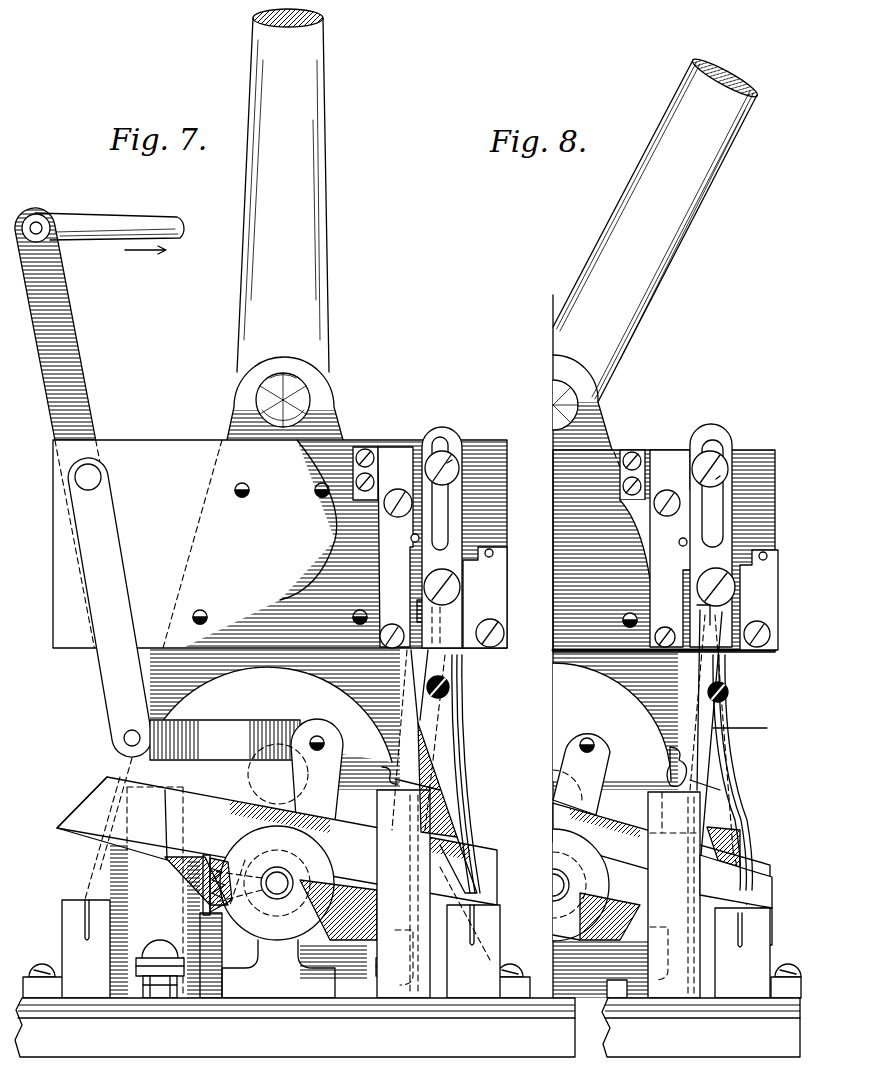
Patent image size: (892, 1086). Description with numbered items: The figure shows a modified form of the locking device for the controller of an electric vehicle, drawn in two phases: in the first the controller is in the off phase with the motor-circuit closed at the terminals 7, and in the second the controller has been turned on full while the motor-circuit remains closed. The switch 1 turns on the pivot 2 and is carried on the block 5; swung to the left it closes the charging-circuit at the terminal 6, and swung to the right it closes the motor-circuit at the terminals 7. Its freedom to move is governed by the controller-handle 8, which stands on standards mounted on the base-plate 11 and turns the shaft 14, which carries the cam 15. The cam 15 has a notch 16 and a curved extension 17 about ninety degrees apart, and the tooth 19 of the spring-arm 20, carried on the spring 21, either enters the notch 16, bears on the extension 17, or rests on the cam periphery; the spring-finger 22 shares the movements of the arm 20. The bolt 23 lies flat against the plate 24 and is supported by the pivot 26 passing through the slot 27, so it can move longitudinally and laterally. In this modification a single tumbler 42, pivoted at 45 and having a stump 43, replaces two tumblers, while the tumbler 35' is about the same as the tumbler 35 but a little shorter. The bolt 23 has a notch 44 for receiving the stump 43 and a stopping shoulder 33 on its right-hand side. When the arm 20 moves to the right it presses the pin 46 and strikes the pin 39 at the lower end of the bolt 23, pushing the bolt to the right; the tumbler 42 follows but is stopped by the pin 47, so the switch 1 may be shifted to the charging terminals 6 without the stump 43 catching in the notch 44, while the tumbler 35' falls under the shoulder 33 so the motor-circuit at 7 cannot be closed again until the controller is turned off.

In FIG. 7, the switch 1 is at (112, 818).
In FIG. 8, the switch 1 is at (736, 900).
In FIG. 7, the pivot 2 is at (269, 883).
In FIG. 8, the pivot 2 is at (557, 887).
In FIG. 7, the block 5 is at (277, 841).
In FIG. 8, the block 5 is at (661, 853).
In FIG. 7, the charging-circuit terminal 6 is at (86, 949).
In FIG. 7, the motor-circuit terminals 7 is at (473, 951).
In FIG. 8, the motor-circuit terminals 7 is at (742, 953).
In FIG. 7, the controller-handle 8 is at (285, 224).
In FIG. 8, the controller-handle 8 is at (657, 252).
In FIG. 7, the base-plate 11 is at (295, 1027).
In FIG. 8, the base-plate 11 is at (701, 1027).
In FIG. 7, the shaft 14 is at (295, 779).
In FIG. 8, the shaft 14 is at (581, 774).
In FIG. 7, the cam 15 is at (275, 719).
In FIG. 8, the cam 15 is at (615, 721).
In FIG. 7, the notch 16 is at (382, 770).
In FIG. 7, the curved extension 17 is at (260, 893).
In FIG. 8, the curved extension 17 is at (667, 766).
In FIG. 7, the tooth 19 is at (403, 785).
In FIG. 8, the tooth 19 is at (690, 780).
In FIG. 7, the spring-arm 20 is at (432, 722).
In FIG. 7, the spring 21 is at (417, 868).
In FIG. 8, the spring 21 is at (697, 890).
In FIG. 7, the spring-finger 22 is at (470, 750).
In FIG. 8, the spring-finger 22 is at (739, 774).
In FIG. 7, the bolt 23 is at (440, 428).
In FIG. 8, the bolt 23 is at (713, 427).
In FIG. 7, the plate 24 is at (280, 598).
In FIG. 7, the pivot 26 is at (449, 463).
In FIG. 8, the pivot 26 is at (716, 479).
In FIG. 7, the slot 27 is at (447, 440).
In FIG. 8, the slot 27 is at (705, 442).
In FIG. 7, the stopping shoulder 33 is at (466, 615).
In FIG. 8, the stopping shoulder 33 is at (732, 612).
In FIG. 8, the tumbler 35 is at (759, 600).
In FIG. 7, the tumbler 35' is at (487, 595).
In FIG. 7, the pin 39 is at (449, 690).
In FIG. 8, the pin 39 is at (729, 693).
In FIG. 7, the tumbler 42 is at (386, 547).
In FIG. 8, the tumbler 42 is at (658, 548).
In FIG. 7, the stump 43 is at (428, 587).
In FIG. 8, the stump 43 is at (701, 587).
In FIG. 7, the notch 44 is at (436, 618).
In FIG. 8, the notch 44 is at (700, 620).
In FIG. 7, the pivot 45 is at (396, 490).
In FIG. 7, the pin 46 is at (370, 517).
In FIG. 8, the pin 47 is at (667, 517).